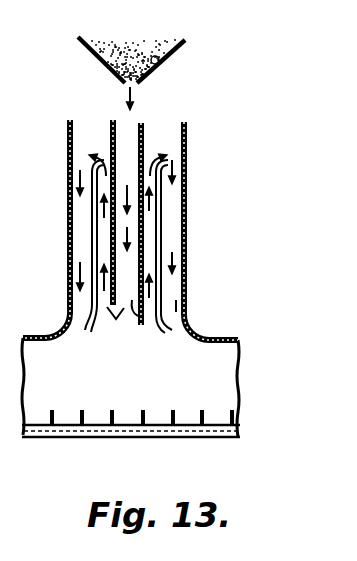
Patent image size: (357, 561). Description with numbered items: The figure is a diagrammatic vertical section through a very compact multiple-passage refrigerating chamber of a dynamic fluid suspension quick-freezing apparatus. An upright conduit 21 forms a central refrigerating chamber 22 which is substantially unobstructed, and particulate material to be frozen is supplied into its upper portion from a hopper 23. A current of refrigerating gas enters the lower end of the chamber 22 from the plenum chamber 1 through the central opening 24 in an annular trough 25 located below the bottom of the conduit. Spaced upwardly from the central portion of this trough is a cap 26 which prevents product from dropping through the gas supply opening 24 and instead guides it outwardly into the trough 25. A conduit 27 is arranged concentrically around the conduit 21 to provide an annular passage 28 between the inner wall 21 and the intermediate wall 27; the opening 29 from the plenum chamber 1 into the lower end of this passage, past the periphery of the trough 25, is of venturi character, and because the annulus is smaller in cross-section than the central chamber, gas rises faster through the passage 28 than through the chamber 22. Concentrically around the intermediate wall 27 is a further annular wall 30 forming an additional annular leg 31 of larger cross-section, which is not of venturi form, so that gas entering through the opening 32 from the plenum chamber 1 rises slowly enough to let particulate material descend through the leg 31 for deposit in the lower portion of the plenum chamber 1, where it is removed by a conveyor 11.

The plenum chamber 1 is at (191, 390).
The conveyor 11 is at (158, 427).
The upright conduit 21 is at (113, 120).
The central refrigerating chamber 22 is at (130, 130).
The hopper 23 is at (159, 62).
The central opening 24 is at (125, 323).
The annular trough 25 is at (165, 322).
The cap 26 is at (123, 276).
The conduit 27 is at (172, 202).
The annular passage 28 is at (148, 152).
The opening 29 is at (98, 313).
The annular wall 30 is at (187, 223).
The annular leg 31 is at (165, 247).
The opening 32 is at (196, 333).